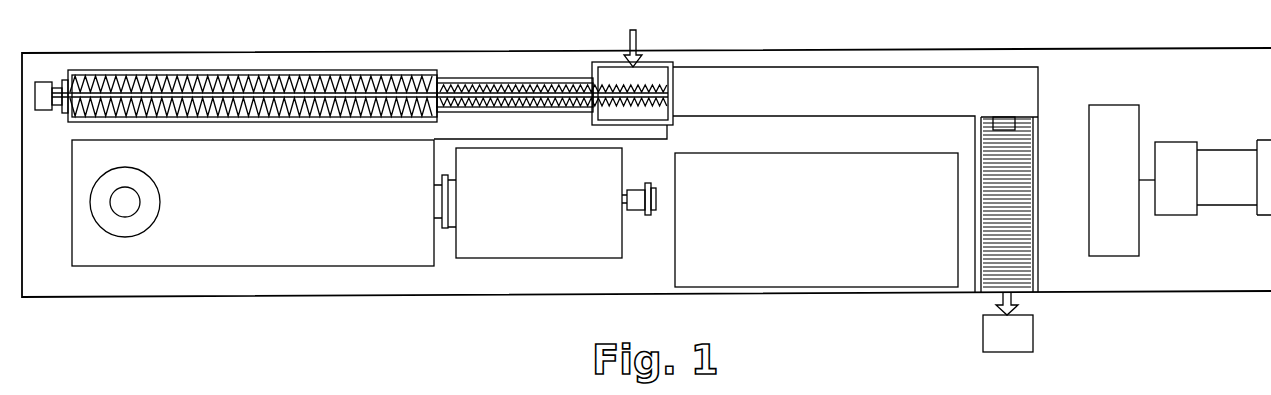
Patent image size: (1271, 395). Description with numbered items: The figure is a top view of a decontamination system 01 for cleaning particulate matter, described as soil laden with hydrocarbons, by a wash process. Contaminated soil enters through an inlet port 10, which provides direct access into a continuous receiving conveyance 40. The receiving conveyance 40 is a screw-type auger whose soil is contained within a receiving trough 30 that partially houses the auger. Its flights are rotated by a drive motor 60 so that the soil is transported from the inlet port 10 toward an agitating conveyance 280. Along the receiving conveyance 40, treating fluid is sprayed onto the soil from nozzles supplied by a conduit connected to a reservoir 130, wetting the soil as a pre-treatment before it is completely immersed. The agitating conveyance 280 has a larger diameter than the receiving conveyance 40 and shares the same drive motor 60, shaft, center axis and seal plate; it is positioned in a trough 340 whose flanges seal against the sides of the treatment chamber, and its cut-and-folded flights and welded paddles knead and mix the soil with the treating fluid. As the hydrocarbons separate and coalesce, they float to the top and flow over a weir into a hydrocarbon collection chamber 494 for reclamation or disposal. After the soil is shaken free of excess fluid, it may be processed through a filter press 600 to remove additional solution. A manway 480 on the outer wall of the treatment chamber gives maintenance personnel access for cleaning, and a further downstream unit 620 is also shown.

The decontamination system 01 is at (66, 299).
The drive motor 60 is at (43, 81).
The agitating conveyance 280 is at (227, 92).
The trough 340 is at (340, 70).
The receiving trough 30 is at (495, 77).
The receiving conveyance 40 is at (533, 82).
The inlet port 10 is at (653, 61).
The reservoir 130 is at (277, 193).
The manway 480 is at (130, 225).
The filter press 600 is at (1024, 346).
The hydrocarbon collection chamber 494 is at (1132, 224).
The downstream unit 620 is at (1245, 183).